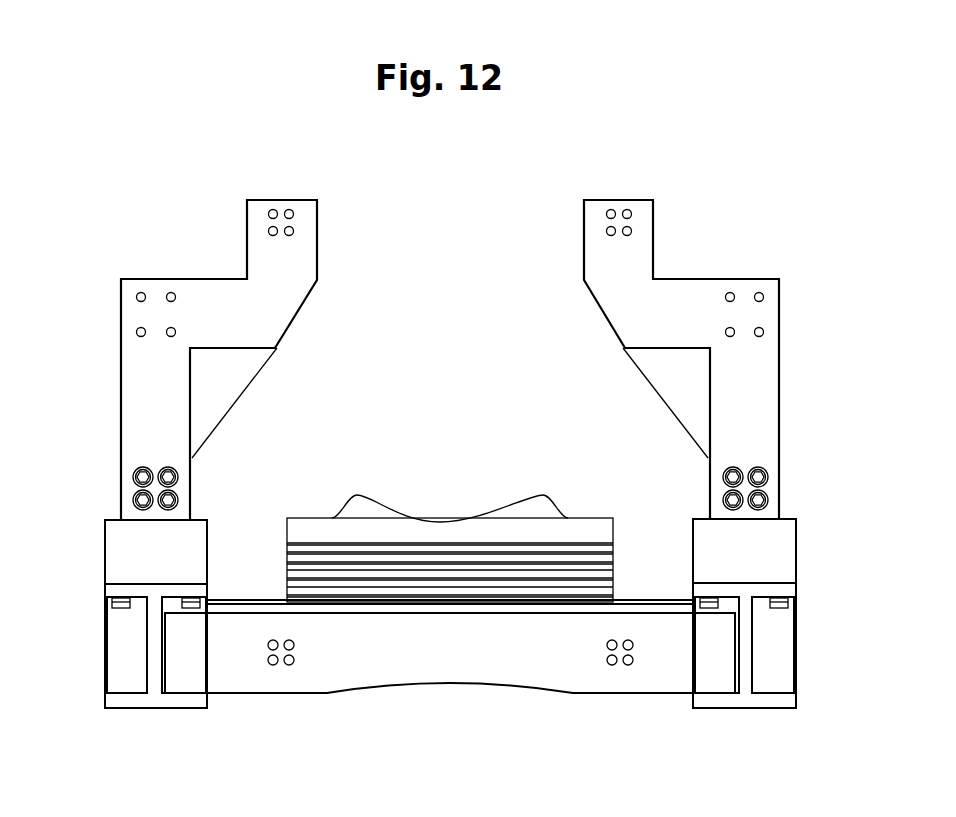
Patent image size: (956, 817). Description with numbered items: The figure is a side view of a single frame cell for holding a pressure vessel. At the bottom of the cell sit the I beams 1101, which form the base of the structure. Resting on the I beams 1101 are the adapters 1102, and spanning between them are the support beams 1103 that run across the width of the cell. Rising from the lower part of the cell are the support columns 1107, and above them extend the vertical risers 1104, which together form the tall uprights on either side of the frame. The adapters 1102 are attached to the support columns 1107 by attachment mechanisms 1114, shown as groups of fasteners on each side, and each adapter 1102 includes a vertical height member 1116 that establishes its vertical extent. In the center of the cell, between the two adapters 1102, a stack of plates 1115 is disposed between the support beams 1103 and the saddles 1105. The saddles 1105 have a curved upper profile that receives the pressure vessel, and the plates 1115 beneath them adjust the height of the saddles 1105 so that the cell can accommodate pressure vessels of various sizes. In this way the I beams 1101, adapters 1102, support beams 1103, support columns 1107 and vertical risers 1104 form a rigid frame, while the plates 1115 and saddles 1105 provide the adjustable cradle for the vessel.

The I beam 1101 is at (190, 702).
The adapter 1102 is at (207, 550).
The support beam 1103 is at (437, 655).
The vertical riser 1104 is at (593, 249).
The saddle 1105 is at (523, 522).
The support column 1107 is at (652, 323).
The attachment mechanism 1114 is at (167, 473).
The plate 1115 is at (441, 557).
The vertical height member 1116 is at (197, 530).